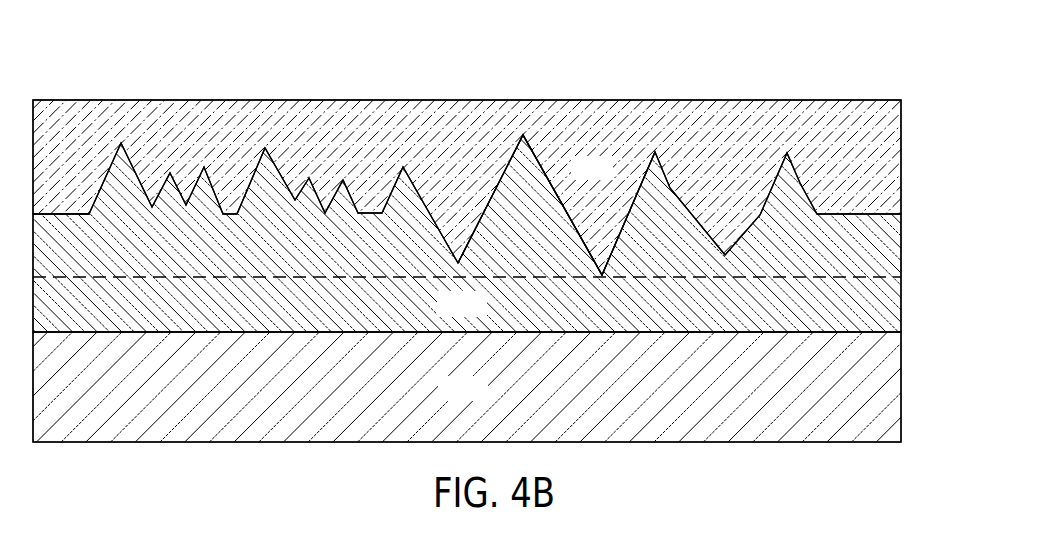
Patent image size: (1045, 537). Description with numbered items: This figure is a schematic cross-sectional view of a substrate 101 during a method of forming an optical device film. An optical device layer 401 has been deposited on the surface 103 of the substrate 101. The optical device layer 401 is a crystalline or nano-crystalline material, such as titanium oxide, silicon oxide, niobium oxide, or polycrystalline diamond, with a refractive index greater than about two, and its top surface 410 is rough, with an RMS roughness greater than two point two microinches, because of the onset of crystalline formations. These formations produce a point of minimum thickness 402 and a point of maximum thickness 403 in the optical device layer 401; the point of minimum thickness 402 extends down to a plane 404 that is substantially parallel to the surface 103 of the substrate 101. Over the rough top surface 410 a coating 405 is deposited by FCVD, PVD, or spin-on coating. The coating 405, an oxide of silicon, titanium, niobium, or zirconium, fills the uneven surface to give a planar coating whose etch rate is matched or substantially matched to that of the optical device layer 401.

The substrate 101 is at (482, 398).
The surface of the substrate 103 is at (867, 332).
The optical device layer 401 is at (482, 314).
The point of minimum thickness 402 is at (600, 264).
The point of maximum thickness 403 is at (524, 118).
The plane 404 is at (810, 283).
The coating 405 is at (465, 145).
The top surface 410 is at (66, 199).